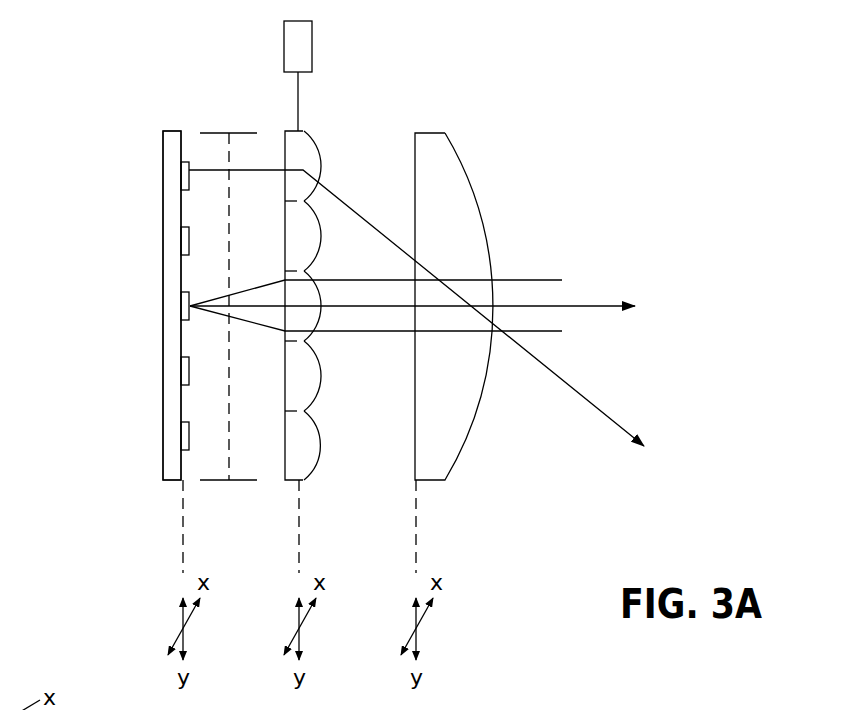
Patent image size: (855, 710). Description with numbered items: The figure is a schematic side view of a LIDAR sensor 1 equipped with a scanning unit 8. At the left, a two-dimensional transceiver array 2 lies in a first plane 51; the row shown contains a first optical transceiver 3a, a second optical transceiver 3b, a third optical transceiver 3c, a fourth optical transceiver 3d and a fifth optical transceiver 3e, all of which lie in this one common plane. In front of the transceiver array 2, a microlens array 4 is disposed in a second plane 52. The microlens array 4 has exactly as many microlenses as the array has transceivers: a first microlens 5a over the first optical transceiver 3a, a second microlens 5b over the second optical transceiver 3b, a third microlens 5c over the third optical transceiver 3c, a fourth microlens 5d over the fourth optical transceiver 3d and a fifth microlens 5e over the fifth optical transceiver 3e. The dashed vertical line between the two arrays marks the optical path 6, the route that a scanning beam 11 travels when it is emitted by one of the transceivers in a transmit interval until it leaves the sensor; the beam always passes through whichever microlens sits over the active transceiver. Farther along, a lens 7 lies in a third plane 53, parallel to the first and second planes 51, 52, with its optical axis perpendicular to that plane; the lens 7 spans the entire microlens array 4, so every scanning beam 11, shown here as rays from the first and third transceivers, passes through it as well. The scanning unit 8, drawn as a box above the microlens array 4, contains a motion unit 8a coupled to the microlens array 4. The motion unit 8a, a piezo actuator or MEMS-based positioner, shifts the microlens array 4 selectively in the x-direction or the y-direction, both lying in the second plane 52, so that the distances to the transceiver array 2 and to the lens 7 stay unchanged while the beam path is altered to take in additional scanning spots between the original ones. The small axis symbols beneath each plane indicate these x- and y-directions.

The LIDAR sensor 1 is at (106, 104).
The transceiver array 2 is at (172, 142).
The first optical transceiver 3a is at (182, 182).
The second optical transceiver 3b is at (182, 247).
The third optical transceiver 3c is at (182, 312).
The fourth optical transceiver 3d is at (182, 377).
The fifth optical transceiver 3e is at (182, 442).
The microlens array 4 is at (312, 124).
The first microlens 5a is at (310, 157).
The second microlens 5b is at (313, 232).
The third microlens 5c is at (313, 315).
The fourth microlens 5d is at (313, 375).
The fifth microlens 5e is at (313, 443).
The optical path 6 is at (222, 130).
The lens 7 is at (432, 146).
The scanning unit 8 is at (251, 69).
The motion unit 8a is at (284, 55).
The scanning beam 11 is at (574, 305).
The first plane 51 is at (183, 520).
The second plane 52 is at (299, 520).
The third plane 53 is at (416, 520).